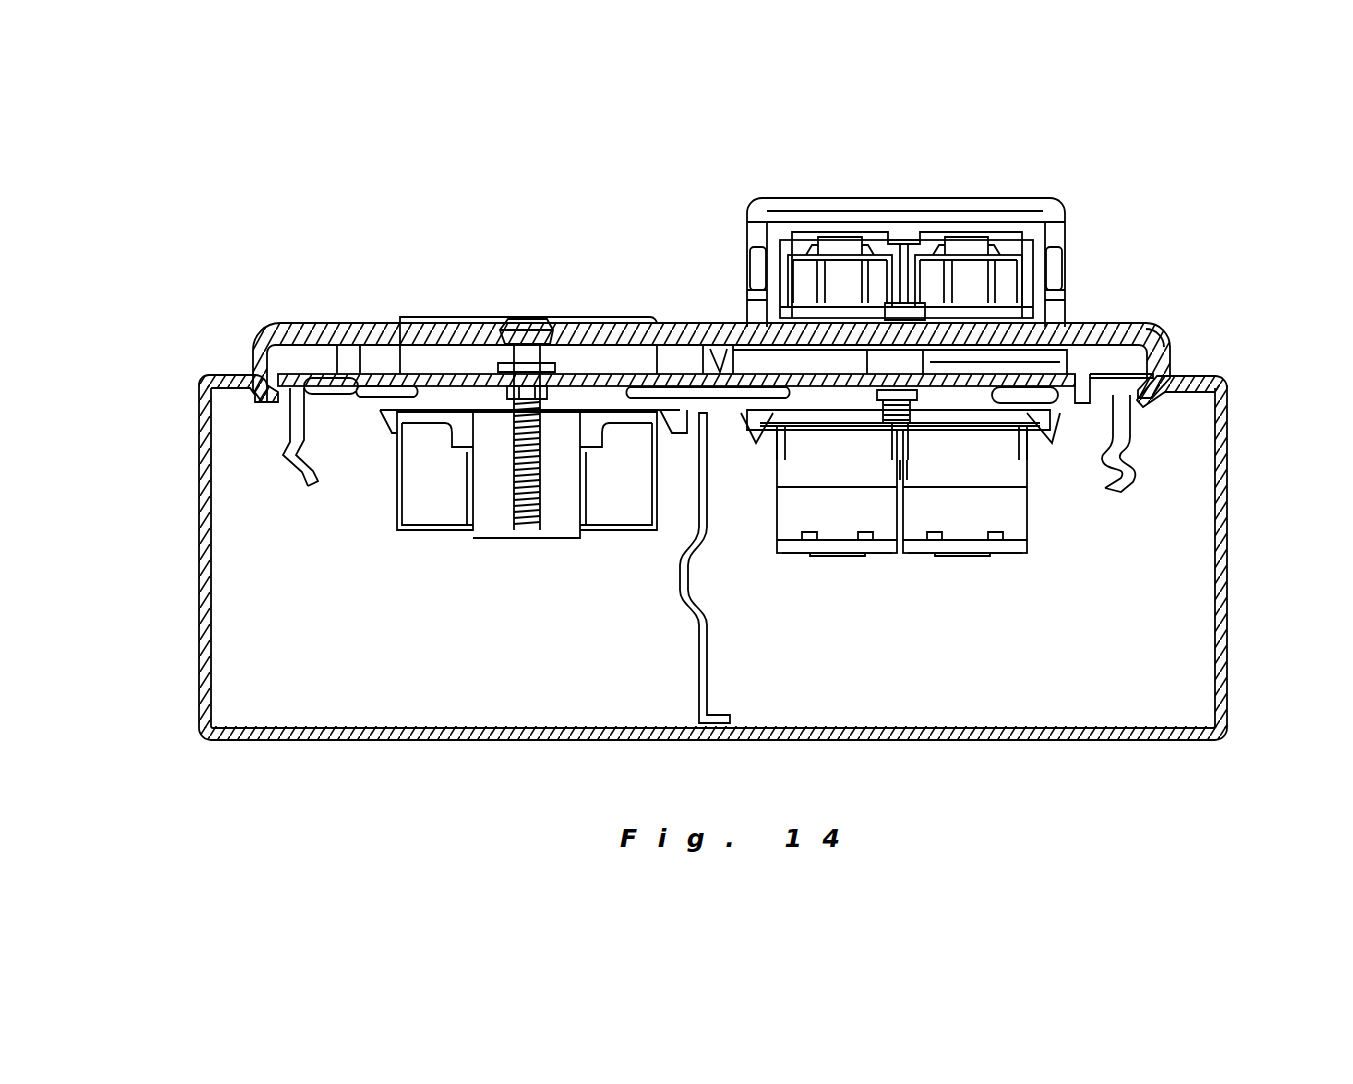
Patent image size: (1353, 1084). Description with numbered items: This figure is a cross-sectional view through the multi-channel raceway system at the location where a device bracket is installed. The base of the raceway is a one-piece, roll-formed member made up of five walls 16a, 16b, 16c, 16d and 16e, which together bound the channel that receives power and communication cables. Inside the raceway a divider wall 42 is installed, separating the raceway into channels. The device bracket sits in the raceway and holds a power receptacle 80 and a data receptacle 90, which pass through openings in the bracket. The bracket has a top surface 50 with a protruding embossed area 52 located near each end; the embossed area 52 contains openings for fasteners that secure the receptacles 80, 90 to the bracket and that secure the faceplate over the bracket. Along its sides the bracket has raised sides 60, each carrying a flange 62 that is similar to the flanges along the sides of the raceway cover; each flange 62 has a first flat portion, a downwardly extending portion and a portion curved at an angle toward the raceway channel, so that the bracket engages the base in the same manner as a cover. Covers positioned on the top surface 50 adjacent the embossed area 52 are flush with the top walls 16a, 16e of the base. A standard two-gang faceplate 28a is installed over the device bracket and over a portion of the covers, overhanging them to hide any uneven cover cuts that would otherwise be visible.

The wall 16a is at (1193, 376).
The wall 16b is at (1229, 528).
The wall 16c is at (917, 741).
The wall 16d is at (197, 545).
The wall 16e is at (243, 373).
The two-gang faceplate 28a is at (1147, 330).
The divider wall 42 is at (706, 632).
The top surface 50 is at (322, 387).
The protruding embossed area 52 is at (387, 368).
The raised side 60 is at (283, 387).
The flange 62 is at (329, 426).
The power receptacle 80 is at (444, 318).
The data receptacle 90 is at (1050, 200).